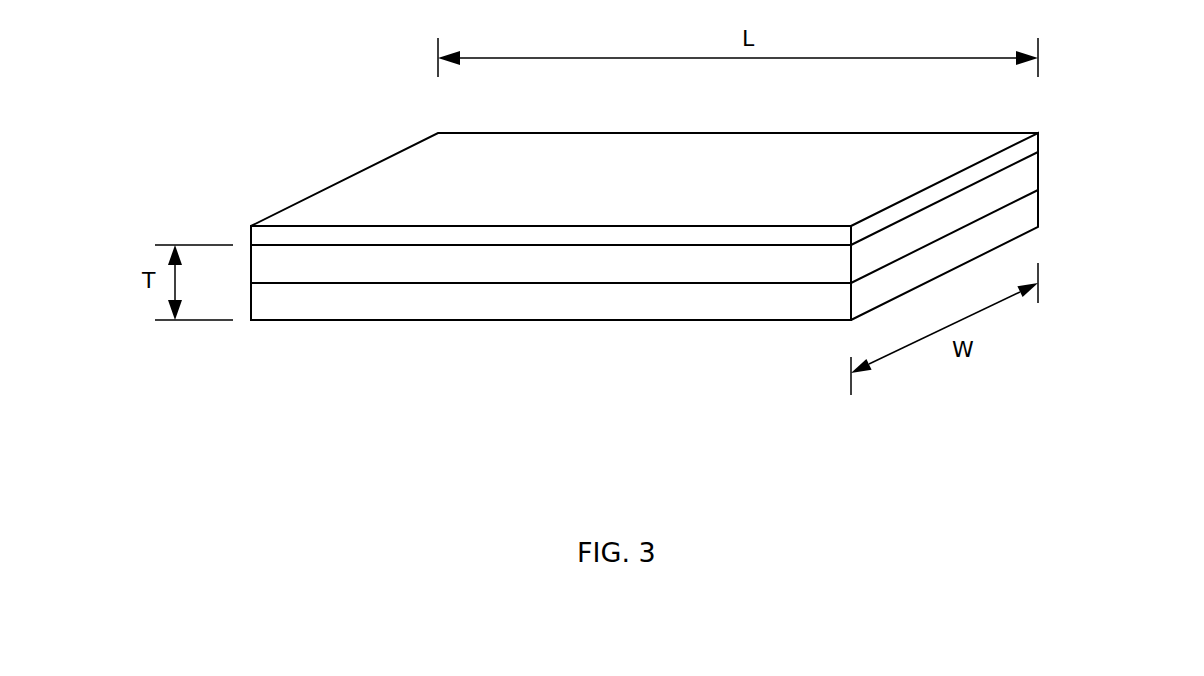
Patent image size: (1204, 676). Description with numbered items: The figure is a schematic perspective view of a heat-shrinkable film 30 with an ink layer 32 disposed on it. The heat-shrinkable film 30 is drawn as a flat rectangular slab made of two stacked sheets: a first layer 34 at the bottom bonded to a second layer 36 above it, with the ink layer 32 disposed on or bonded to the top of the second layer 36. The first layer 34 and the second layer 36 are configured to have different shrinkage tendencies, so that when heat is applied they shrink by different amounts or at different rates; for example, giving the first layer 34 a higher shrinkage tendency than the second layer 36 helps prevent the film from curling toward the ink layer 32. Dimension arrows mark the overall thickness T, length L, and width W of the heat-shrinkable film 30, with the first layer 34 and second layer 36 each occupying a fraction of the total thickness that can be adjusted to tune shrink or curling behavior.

The heat-shrinkable film 30 is at (721, 258).
The ink layer 32 is at (367, 188).
The first layer 34 is at (328, 302).
The second layer 36 is at (588, 267).